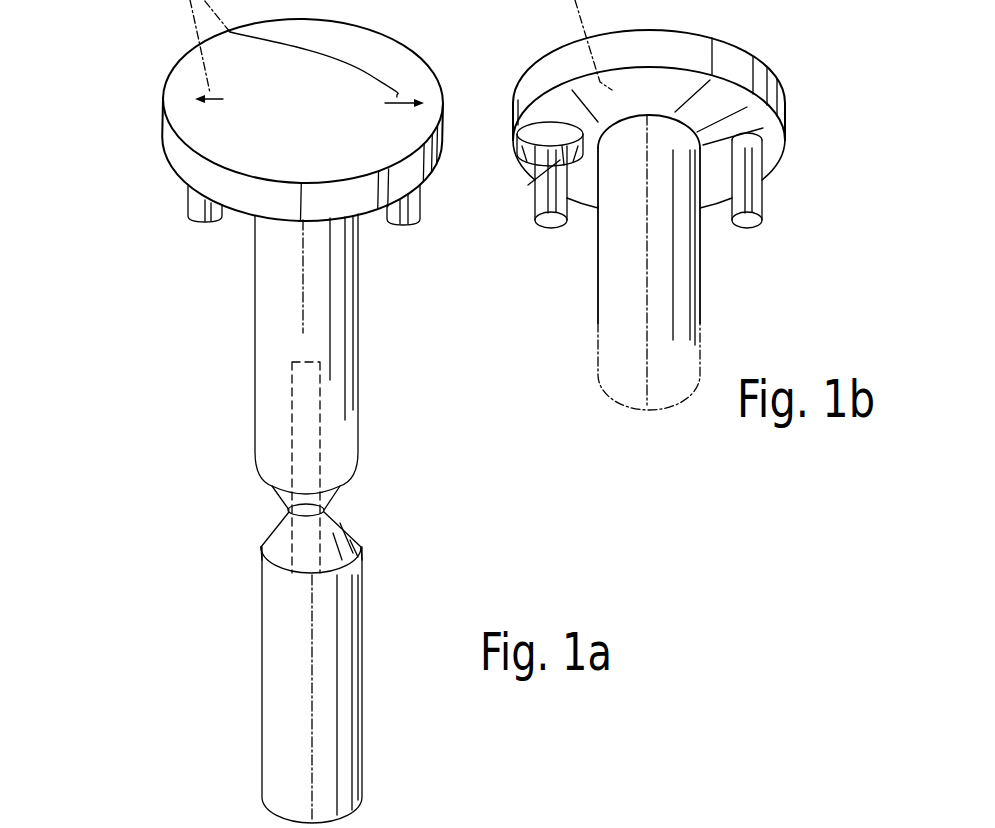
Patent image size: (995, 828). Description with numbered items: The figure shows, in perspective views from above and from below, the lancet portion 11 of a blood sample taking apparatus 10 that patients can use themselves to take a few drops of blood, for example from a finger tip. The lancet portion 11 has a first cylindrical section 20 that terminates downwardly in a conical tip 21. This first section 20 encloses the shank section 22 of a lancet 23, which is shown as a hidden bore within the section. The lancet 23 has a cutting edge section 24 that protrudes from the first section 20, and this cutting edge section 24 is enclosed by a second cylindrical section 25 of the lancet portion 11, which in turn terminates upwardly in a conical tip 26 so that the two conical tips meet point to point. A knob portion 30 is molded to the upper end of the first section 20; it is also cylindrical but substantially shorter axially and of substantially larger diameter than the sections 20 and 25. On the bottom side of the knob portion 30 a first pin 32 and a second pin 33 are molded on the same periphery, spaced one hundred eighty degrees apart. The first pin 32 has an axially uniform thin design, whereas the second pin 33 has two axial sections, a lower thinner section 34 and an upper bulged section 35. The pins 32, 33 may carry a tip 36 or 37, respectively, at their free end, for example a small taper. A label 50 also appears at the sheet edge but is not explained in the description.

In FIG. 1A, the blood sample taking apparatus 10 is at (108, 699).
In FIG. 1A, the lancet portion 11 is at (185, 424).
In FIG. 1A, the first cylindrical section 20 is at (275, 327).
In FIG. 1A, the conical tip 21 is at (330, 492).
In FIG. 1A, the shank section 22 is at (310, 412).
In FIG. 1A, the lancet 23 is at (285, 472).
In FIG. 1A, the cutting edge section 24 is at (307, 547).
In FIG. 1A, the second cylindrical section 25 is at (290, 673).
In FIG. 1A, the conical tip 26 is at (357, 540).
In FIG. 1A, the knob portion 30 is at (384, 31).
In FIG. 1A, the first pin 32 is at (393, 228).
In FIG. 1B, the first pin 32 is at (746, 176).
In FIG. 1A, the second pin 33 is at (183, 205).
In FIG. 1B, the second pin 33 is at (527, 189).
In FIG. 1B, the lower thinner section 34 is at (538, 208).
In FIG. 1B, the upper bulged section 35 is at (527, 124).
In FIG. 1B, the tip 36 is at (752, 232).
In FIG. 1B, the tip 37 is at (548, 230).
In FIG. 1A, the socket 50 is at (413, 819).